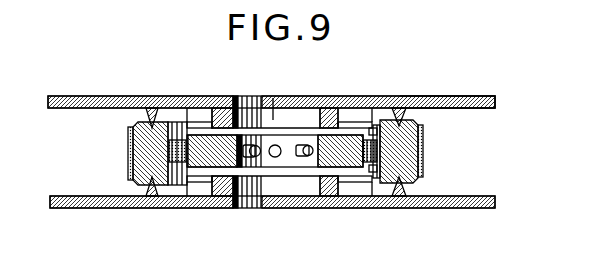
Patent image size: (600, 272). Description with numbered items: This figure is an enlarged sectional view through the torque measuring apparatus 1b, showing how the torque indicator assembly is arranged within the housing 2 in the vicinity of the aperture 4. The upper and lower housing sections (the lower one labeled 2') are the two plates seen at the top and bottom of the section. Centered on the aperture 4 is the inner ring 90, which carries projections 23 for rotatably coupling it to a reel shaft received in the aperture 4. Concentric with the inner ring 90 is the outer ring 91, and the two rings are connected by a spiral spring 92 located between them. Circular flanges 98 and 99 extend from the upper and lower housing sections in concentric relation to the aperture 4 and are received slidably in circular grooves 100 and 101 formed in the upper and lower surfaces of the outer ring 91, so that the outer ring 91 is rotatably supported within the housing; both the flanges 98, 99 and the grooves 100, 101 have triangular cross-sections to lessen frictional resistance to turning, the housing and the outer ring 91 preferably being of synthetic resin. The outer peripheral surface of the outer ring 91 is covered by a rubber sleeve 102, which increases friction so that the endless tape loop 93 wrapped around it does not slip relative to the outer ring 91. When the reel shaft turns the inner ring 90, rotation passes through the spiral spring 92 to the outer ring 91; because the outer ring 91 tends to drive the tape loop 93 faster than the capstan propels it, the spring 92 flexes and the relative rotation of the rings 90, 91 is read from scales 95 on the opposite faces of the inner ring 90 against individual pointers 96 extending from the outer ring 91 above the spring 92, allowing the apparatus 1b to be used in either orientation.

The torque measuring apparatus 1b is at (502, 96).
The housing 2 is at (271, 84).
The lower plate 2' is at (279, 221).
The aperture 4 is at (301, 186).
The projections 23 is at (254, 157).
The inner ring 90 is at (318, 133).
The outer ring 91 is at (173, 186).
The spiral spring 92 is at (371, 138).
The tape 93 is at (424, 150).
The scale 95 is at (205, 133).
The pointer 96 is at (382, 122).
The circular flange 98 is at (402, 112).
The circular flange 99 is at (148, 193).
The circular groove 100 is at (148, 113).
The circular groove 101 is at (403, 190).
The rubber sleeve 102 is at (132, 154).